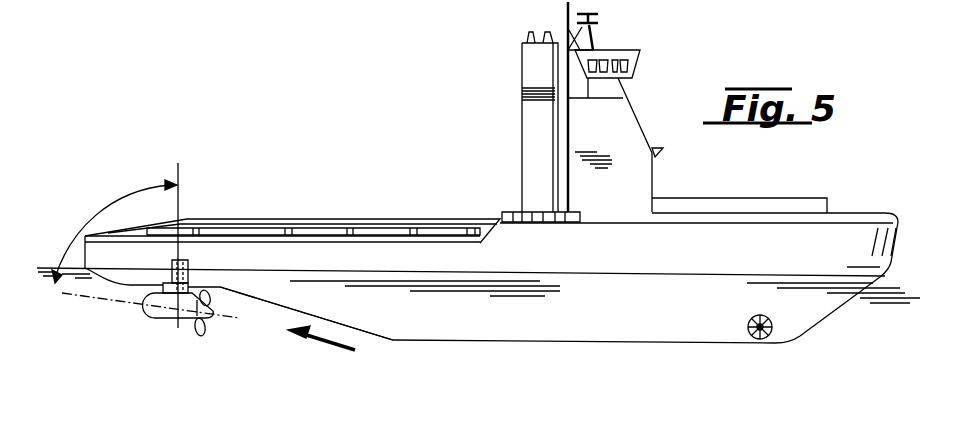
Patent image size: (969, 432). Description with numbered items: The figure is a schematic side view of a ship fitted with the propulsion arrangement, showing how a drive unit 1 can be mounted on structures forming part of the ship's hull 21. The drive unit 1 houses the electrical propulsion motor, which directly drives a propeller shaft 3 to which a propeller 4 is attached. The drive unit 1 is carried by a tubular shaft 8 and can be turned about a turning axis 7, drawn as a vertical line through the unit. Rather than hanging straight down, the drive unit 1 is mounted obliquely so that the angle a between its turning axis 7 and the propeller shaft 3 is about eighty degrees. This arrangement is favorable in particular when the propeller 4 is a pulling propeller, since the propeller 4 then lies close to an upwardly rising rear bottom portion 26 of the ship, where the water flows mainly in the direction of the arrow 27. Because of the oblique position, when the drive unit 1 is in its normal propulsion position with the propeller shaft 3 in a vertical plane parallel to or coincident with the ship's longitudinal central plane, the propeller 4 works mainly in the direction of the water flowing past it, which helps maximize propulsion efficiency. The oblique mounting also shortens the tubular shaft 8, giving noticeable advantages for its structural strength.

The drive unit 1 is at (162, 315).
The propeller shaft 3 is at (125, 298).
The propeller 4 is at (203, 335).
The turning axis 7 is at (180, 197).
The tubular shaft 8 is at (187, 262).
The ship's hull 21 is at (462, 340).
The upwardly rising rear bottom portion 26 is at (270, 303).
The arrow 27 is at (335, 343).
The angle a is at (117, 200).